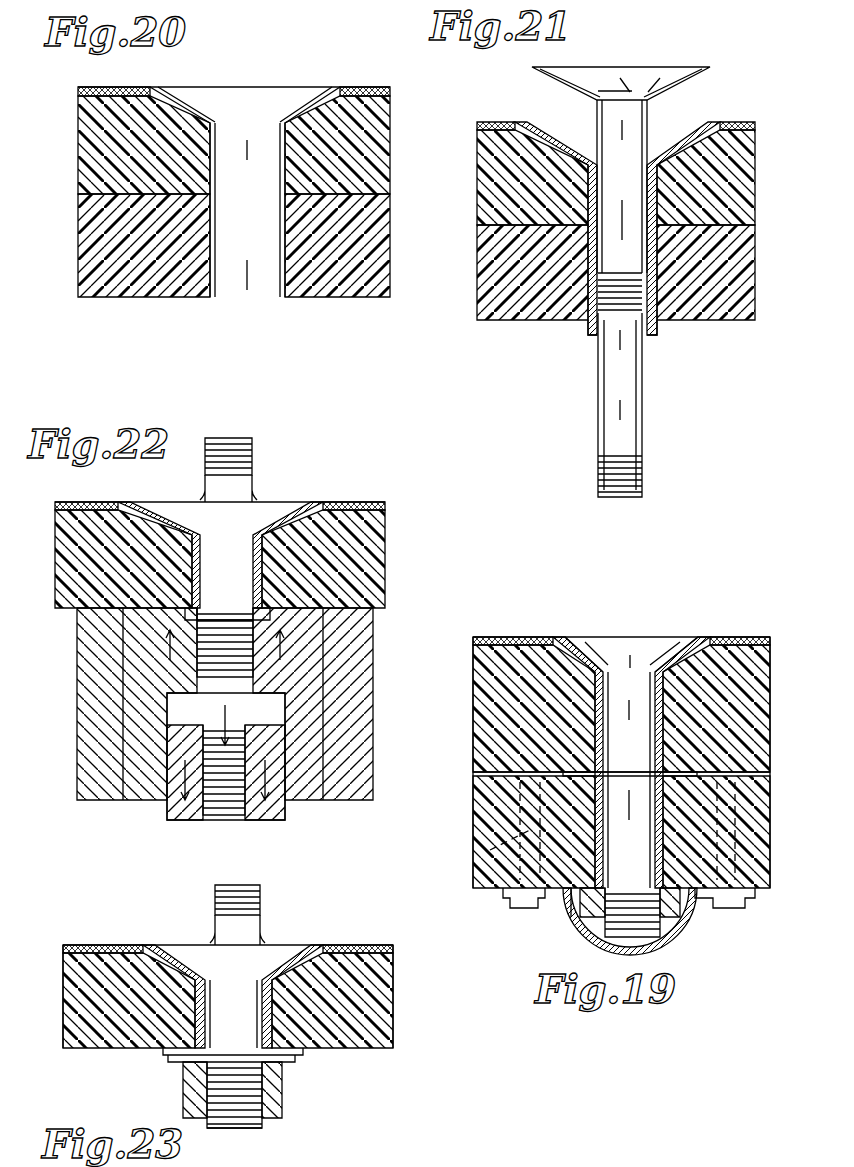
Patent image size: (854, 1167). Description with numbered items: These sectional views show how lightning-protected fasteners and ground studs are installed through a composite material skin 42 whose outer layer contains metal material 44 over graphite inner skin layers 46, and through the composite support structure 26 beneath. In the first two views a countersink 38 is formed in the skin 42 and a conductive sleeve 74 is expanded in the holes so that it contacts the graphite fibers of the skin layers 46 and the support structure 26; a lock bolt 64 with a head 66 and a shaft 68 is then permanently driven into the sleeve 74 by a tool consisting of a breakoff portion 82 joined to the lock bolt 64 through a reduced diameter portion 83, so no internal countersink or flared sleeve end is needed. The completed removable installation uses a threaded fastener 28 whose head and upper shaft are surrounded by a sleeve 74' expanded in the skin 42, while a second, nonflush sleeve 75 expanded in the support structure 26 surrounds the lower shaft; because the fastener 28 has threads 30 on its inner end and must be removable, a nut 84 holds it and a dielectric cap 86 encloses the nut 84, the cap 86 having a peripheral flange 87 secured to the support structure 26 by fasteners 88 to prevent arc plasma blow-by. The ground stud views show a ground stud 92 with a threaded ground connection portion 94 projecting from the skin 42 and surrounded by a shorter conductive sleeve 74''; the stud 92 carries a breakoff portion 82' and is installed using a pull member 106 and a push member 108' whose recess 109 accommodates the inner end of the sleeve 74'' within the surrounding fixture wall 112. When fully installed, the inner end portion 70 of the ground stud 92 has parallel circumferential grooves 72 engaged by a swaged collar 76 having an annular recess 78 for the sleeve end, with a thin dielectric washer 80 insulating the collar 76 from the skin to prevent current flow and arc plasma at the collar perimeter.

In FIG. 20, the support structure 26 is at (376, 250).
In FIG. 21, the support structure 26 is at (493, 322).
In FIG. 19, the support structure 26 is at (478, 800).
In FIG. 19, the fastener 28 is at (632, 636).
In FIG. 19, the threads 30 is at (592, 947).
In FIG. 20, the countersink 38 is at (186, 100).
In FIG. 20, the skin 42 is at (391, 88).
In FIG. 23, the skin 42 is at (396, 968).
In FIG. 19, the skin 42 is at (478, 654).
In FIG. 20, the metal material 44 is at (340, 86).
In FIG. 21, the metal material 44 is at (494, 122).
In FIG. 22, the metal material 44 is at (358, 500).
In FIG. 23, the metal material 44 is at (372, 944).
In FIG. 19, the metal material 44 is at (505, 636).
In FIG. 20, the inner skin layers 46 is at (376, 162).
In FIG. 21, the inner skin layers 46 is at (488, 197).
In FIG. 22, the inner skin layers 46 is at (380, 545).
In FIG. 23, the inner skin layers 46 is at (380, 1027).
In FIG. 19, the inner skin layers 46 is at (500, 723).
In FIG. 21, the lock bolt 64 is at (676, 66).
In FIG. 21, the head 66 is at (615, 80).
In FIG. 21, the shaft 68 is at (636, 193).
In FIG. 23, the inner end portion 70 is at (265, 1097).
In FIG. 21, the parallel circumferential grooves 72 is at (610, 292).
In FIG. 23, the parallel circumferential grooves 72 is at (230, 1085).
In FIG. 21, the conductive sleeve 74 is at (624, 210).
In FIG. 19, the sleeve 74' is at (631, 762).
In FIG. 22, the conductive sleeve 74'' is at (220, 561).
In FIG. 23, the conductive sleeve 74'' is at (233, 996).
In FIG. 19, the sleeve 75 is at (610, 848).
In FIG. 23, the collar 76 is at (282, 1112).
In FIG. 23, the annular recess 78 is at (300, 1060).
In FIG. 23, the washer 80 is at (165, 1053).
In FIG. 21, the breakoff portion 82 is at (649, 405).
In FIG. 22, the breakoff portion 82' is at (233, 732).
In FIG. 21, the reduced diameter portion 83 is at (658, 318).
In FIG. 19, the nut 84 is at (700, 922).
In FIG. 19, the dielectric cap 86 is at (690, 944).
In FIG. 19, the peripheral flange 87 is at (505, 904).
In FIG. 19, the fasteners 88 is at (470, 852).
In FIG. 22, the ground stud 92 is at (258, 498).
In FIG. 23, the ground stud 92 is at (268, 942).
In FIG. 22, the threaded ground connection portion 94 is at (205, 470).
In FIG. 23, the threaded ground connection portion 94 is at (262, 900).
In FIG. 22, the pull member 106 is at (292, 816).
In FIG. 22, the push member 108' is at (225, 735).
In FIG. 22, the recess 109 is at (272, 620).
In FIG. 22, the fixture wall 112 is at (360, 712).